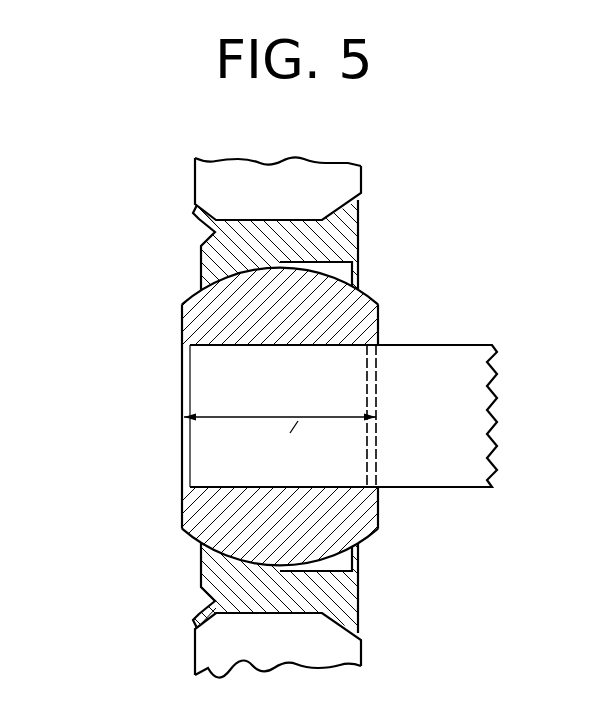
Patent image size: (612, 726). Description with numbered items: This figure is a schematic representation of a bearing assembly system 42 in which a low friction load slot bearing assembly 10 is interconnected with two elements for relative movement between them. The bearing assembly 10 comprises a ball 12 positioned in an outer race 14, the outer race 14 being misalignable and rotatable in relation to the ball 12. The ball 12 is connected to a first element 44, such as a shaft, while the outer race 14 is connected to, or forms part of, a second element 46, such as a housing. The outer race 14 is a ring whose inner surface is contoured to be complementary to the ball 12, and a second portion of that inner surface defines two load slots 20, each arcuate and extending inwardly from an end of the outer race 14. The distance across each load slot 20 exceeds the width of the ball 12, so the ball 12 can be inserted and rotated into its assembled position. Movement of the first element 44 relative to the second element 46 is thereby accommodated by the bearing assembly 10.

The bearing assembly 10 is at (160, 154).
The ball 12 is at (180, 500).
The outer race 14 is at (358, 240).
The load slot 20 is at (343, 275).
The bearing assembly system 42 is at (195, 121).
The first element 44 is at (438, 358).
The second element 46 is at (195, 178).